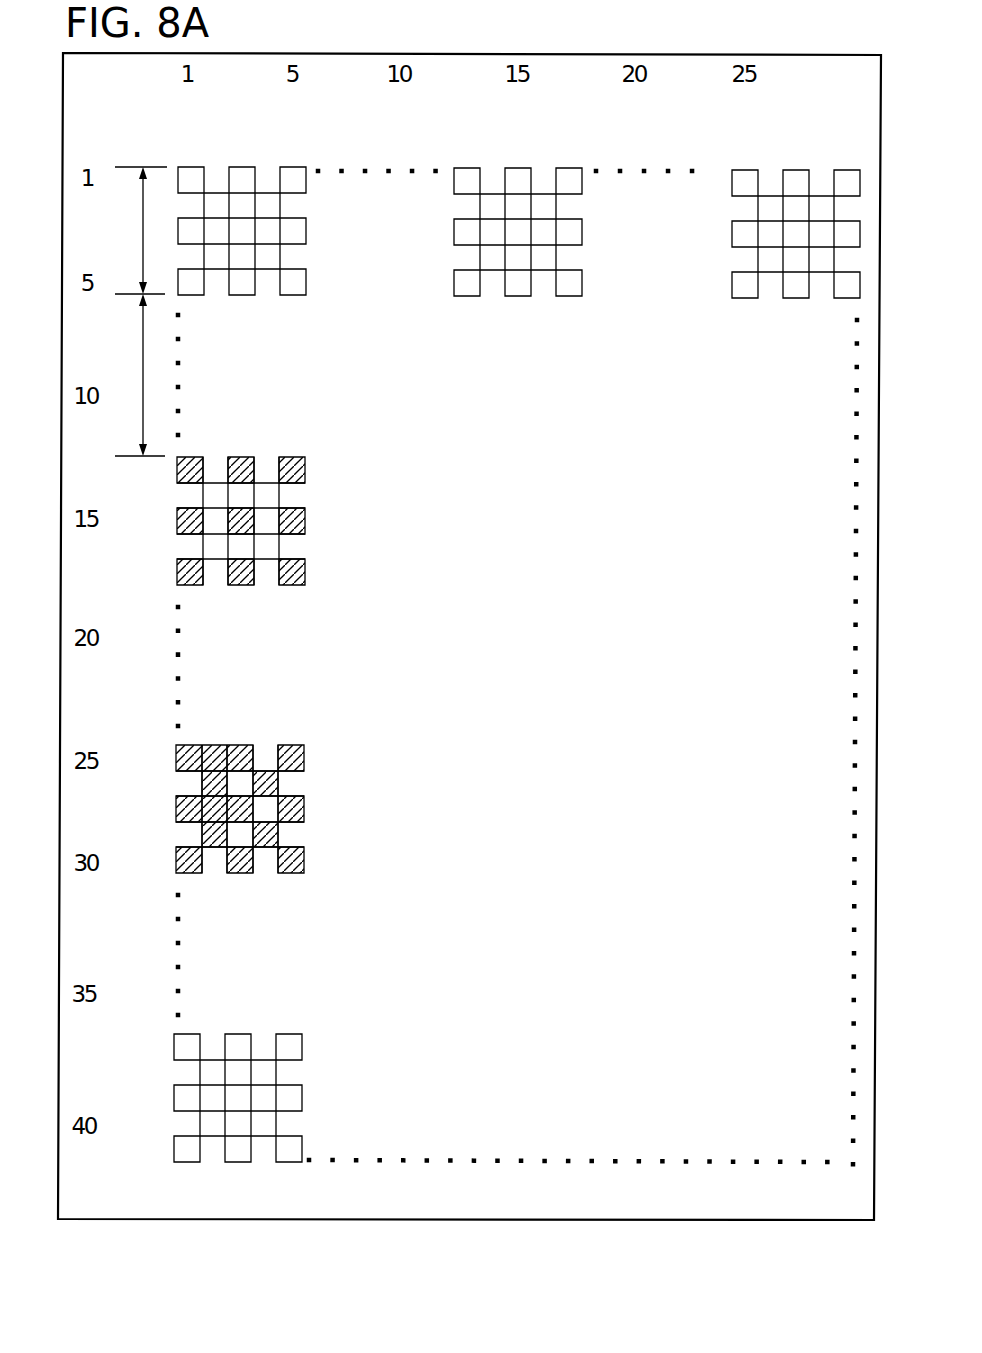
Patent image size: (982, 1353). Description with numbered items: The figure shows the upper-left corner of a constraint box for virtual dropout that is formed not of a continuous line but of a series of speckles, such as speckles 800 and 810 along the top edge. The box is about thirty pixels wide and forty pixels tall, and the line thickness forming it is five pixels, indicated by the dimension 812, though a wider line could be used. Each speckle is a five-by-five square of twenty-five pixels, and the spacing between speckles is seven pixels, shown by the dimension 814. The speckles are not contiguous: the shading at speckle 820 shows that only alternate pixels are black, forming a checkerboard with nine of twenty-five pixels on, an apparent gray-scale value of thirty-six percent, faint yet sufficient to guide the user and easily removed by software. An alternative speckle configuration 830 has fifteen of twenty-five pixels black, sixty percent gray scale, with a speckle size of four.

The speckle 800 is at (250, 153).
The speckle 810 is at (545, 156).
The line thickness 812 is at (143, 250).
The spacing between pixels 814 is at (143, 372).
The speckle 820 is at (364, 522).
The alternative speckle configuration 830 is at (364, 812).